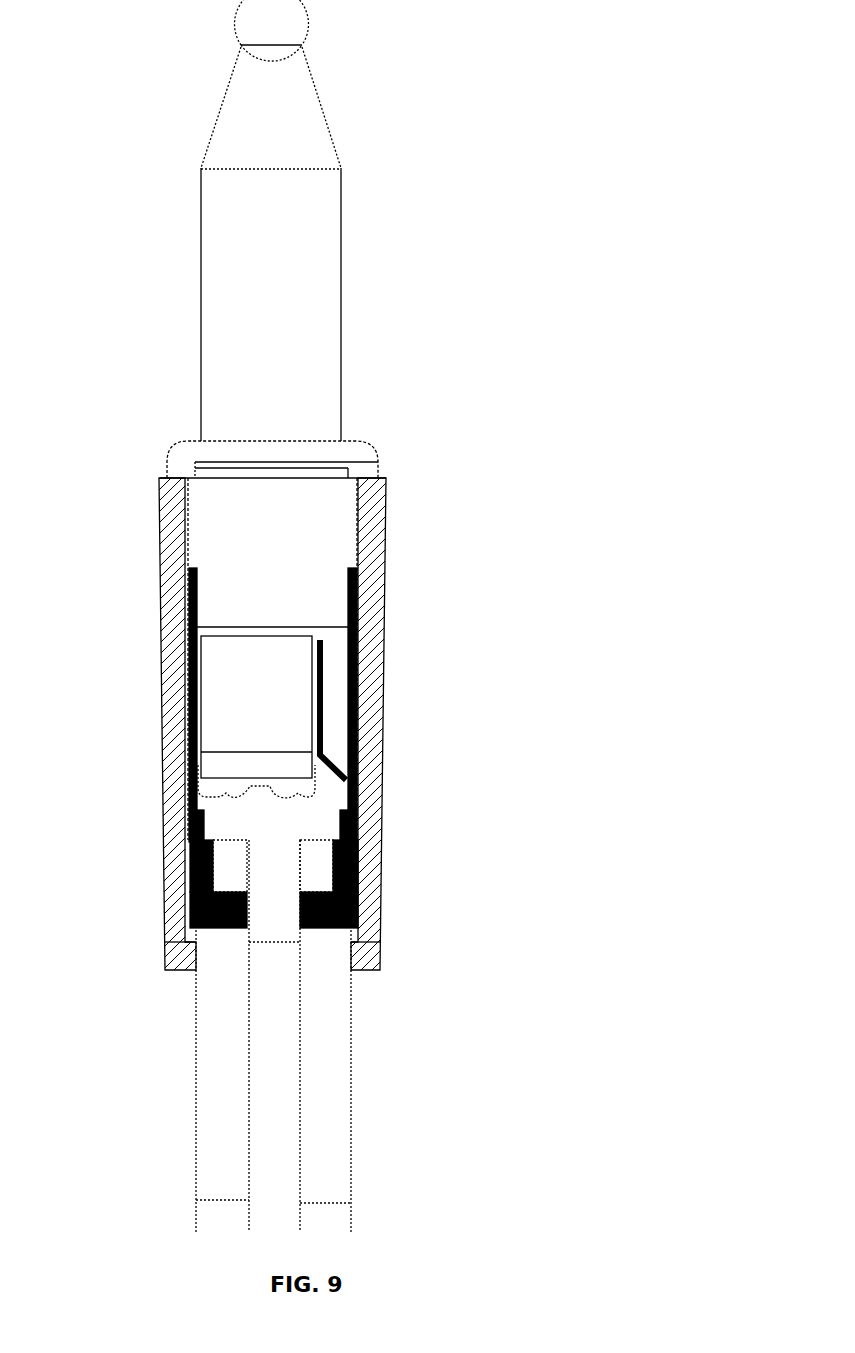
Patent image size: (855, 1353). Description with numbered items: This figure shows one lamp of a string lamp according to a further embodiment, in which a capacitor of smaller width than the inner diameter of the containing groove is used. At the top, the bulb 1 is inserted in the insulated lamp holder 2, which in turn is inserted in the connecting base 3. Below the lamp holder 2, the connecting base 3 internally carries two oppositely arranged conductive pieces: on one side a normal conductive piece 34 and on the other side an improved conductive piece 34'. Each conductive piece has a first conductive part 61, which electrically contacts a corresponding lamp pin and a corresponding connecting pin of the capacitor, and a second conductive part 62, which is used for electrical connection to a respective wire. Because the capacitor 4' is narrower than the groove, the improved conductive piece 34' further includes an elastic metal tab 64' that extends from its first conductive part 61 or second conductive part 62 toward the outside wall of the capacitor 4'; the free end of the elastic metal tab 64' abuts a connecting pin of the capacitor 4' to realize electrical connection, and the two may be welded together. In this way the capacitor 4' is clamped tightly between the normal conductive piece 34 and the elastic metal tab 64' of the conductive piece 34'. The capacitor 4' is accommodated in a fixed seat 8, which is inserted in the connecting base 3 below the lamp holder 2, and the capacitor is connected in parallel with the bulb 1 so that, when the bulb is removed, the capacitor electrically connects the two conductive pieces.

The bulb 1 is at (297, 312).
The insulated lamp holder 2 is at (350, 452).
The connecting base 3 is at (383, 525).
The capacitor 4' is at (186, 711).
The first conductive part 61 is at (380, 672).
The elastic metal tab 64' is at (407, 710).
The second conductive part 62 is at (380, 868).
The improved conductive piece 34' is at (530, 752).
The conductive piece 34 is at (217, 854).
The fixed seat 8 is at (323, 1080).